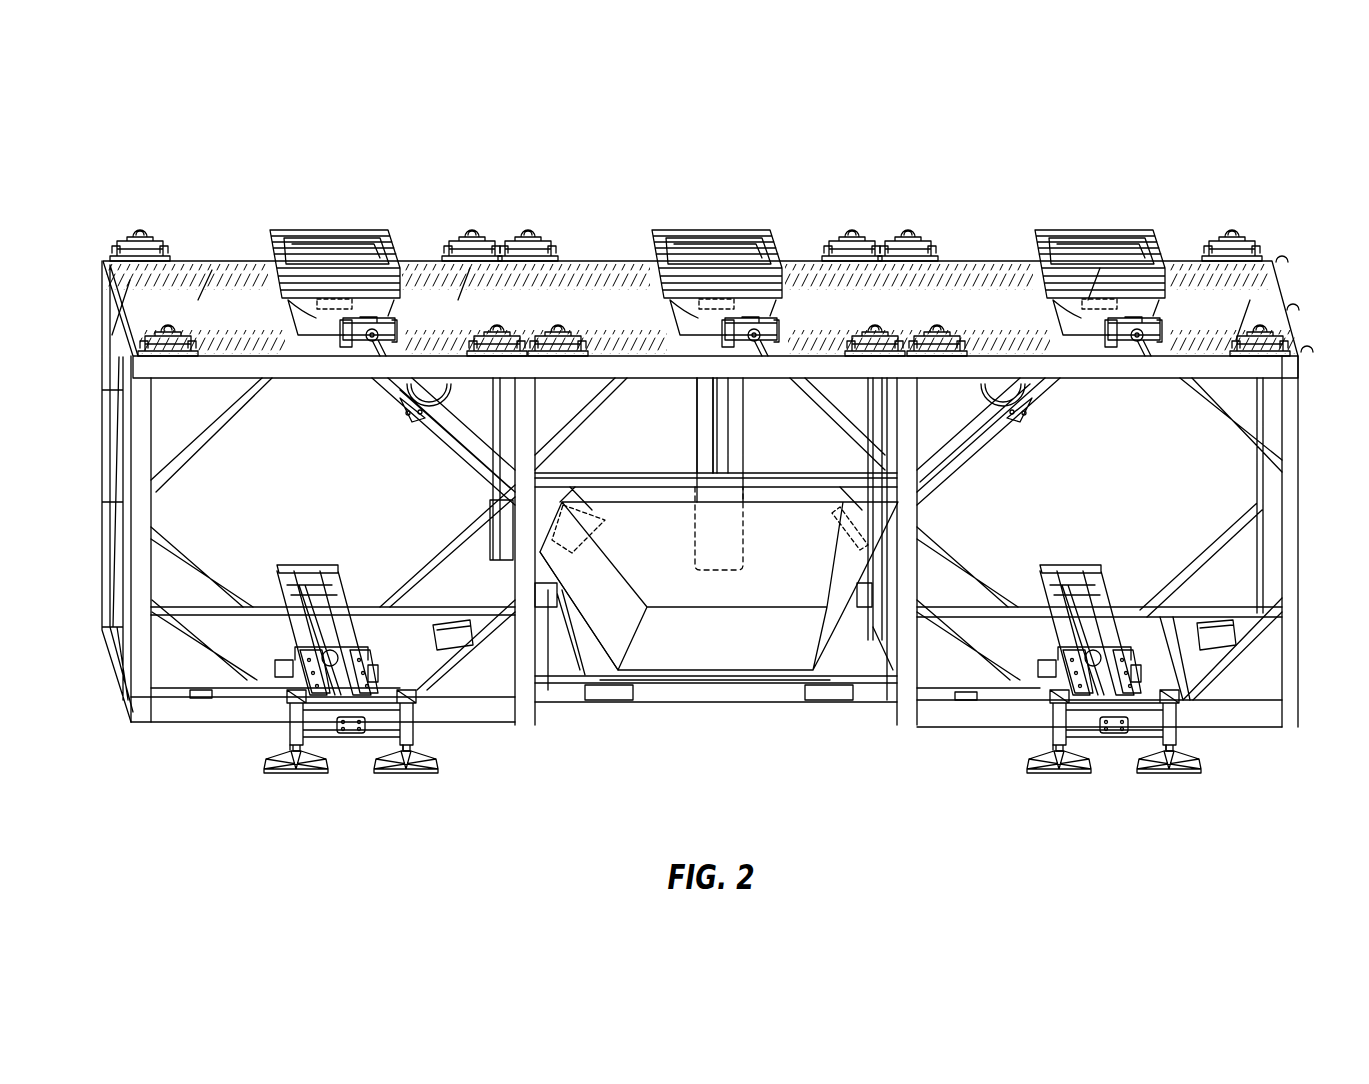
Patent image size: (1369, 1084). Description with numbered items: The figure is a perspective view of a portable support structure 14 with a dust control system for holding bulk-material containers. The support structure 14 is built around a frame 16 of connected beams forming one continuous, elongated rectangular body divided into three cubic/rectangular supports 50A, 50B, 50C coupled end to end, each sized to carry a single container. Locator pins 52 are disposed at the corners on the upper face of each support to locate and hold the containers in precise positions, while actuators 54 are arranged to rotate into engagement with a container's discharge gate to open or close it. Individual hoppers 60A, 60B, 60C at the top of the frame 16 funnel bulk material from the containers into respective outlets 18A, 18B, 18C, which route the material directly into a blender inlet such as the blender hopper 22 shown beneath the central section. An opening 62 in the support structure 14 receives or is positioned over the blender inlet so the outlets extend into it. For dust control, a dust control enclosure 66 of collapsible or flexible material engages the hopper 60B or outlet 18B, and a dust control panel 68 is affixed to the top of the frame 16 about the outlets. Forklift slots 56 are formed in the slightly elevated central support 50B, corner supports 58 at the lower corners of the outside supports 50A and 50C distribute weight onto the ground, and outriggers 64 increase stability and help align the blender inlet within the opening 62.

The support structure 14 is at (118, 148).
The frame 16 is at (135, 580).
The outlet 18A is at (470, 407).
The outlet 18B is at (700, 415).
The outlet 18C is at (960, 407).
The blender hopper 22 is at (698, 665).
The cubic/rectangular support 50A is at (248, 640).
The cubic/rectangular support 50B is at (557, 665).
The cubic/rectangular support 50C is at (1245, 556).
The locator pins 52 is at (140, 233).
The actuators 54 is at (307, 310).
The slots 56 is at (607, 692).
The corner supports 58 is at (447, 625).
The hopper 60A is at (390, 275).
The hopper 60B is at (760, 275).
The hopper 60C is at (1140, 275).
The opening 62 is at (865, 660).
The outriggers 64 is at (258, 741).
The dust control enclosure 66 is at (327, 303).
The dust control panel 68 is at (222, 290).